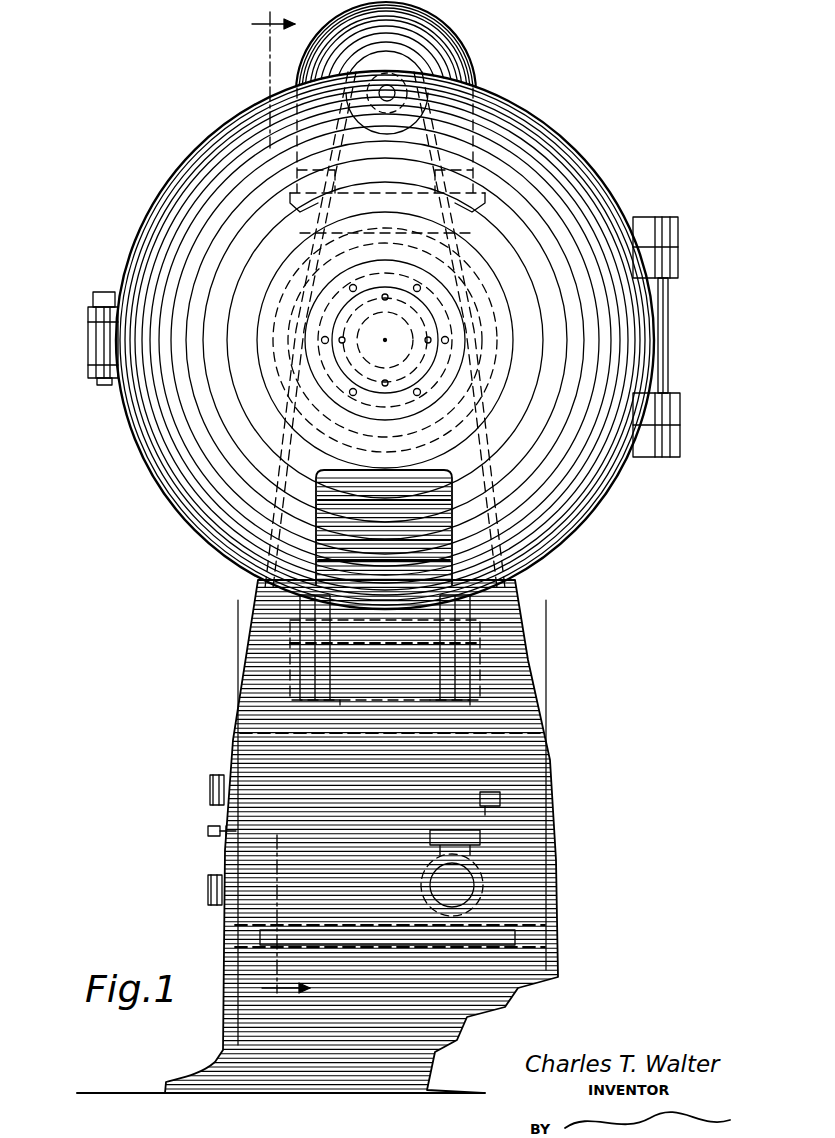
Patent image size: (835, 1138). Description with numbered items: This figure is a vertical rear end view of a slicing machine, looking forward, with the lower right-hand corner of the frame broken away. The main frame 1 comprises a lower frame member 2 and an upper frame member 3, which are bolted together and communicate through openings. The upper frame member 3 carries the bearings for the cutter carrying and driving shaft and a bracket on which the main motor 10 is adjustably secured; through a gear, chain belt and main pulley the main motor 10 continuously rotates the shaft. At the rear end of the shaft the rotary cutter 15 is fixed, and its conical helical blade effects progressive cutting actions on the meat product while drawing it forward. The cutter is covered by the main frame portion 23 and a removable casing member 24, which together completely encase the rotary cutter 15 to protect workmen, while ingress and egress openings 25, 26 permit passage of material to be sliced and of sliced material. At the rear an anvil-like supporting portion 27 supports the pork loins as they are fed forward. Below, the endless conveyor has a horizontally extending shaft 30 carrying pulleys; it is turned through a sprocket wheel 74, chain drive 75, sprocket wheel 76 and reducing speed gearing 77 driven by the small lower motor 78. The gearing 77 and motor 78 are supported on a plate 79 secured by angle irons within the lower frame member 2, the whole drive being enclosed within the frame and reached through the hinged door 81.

The main frame 1 is at (667, 517).
The lower frame member 2 is at (545, 748).
The upper frame member 3 is at (272, 639).
The main motor 10 is at (460, 53).
The rotary cutter 15 is at (417, 523).
The main frame portion 23 is at (532, 135).
The removable casing member 24 is at (603, 180).
The ingress and egress opening 25 is at (343, 500).
The ingress and egress opening 26 is at (330, 505).
The anvil-like supporting portion 27 is at (257, 610).
The horizontally extending shaft 30 is at (495, 653).
The sprocket wheel 74 is at (490, 630).
The chain drive 75 is at (492, 798).
The sprocket wheel 76 is at (500, 895).
The reducing speed gearing 77 is at (492, 845).
The lower motor 78 is at (430, 858).
The plate 79 is at (558, 923).
The hinged door 81 is at (220, 836).